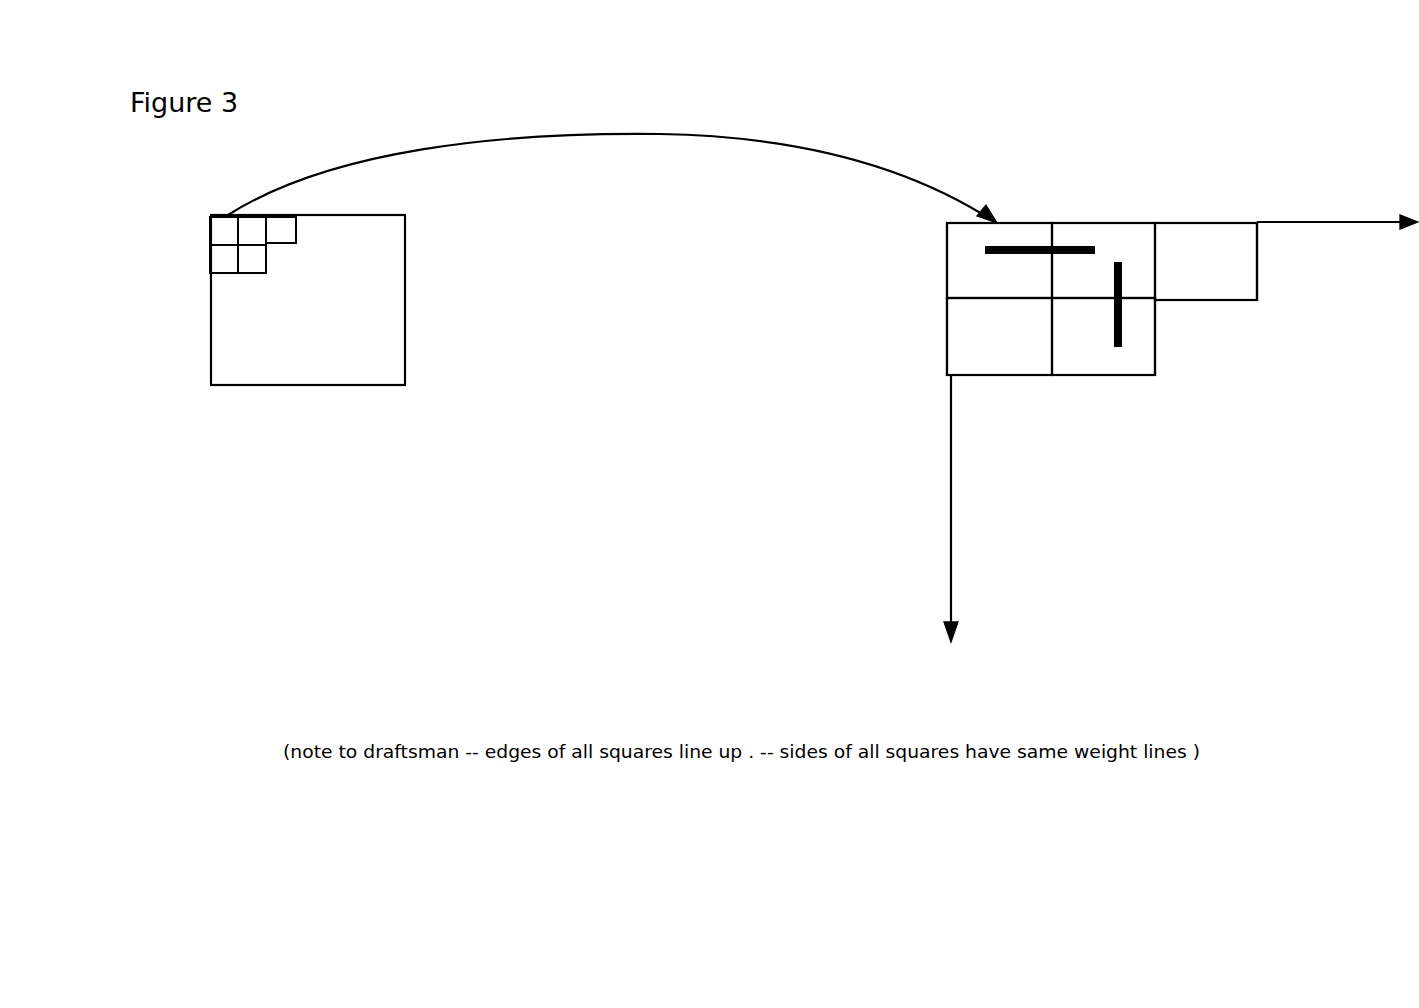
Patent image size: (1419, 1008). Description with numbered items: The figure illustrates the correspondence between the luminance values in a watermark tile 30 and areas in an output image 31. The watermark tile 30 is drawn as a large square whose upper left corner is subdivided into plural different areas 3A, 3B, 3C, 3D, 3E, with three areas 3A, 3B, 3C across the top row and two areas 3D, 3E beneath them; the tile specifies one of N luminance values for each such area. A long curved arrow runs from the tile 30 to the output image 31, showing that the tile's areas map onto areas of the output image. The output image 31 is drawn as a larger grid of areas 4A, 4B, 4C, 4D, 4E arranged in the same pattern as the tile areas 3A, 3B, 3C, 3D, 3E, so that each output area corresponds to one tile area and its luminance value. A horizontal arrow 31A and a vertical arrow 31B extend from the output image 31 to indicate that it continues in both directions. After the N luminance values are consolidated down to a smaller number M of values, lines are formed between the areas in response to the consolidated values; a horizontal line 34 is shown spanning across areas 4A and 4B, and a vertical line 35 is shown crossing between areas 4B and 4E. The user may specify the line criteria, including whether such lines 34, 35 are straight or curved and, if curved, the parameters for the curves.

The watermark tile 30 is at (288, 397).
The watermark tile area 3A is at (228, 228).
The watermark tile area 3B is at (252, 228).
The watermark tile area 3C is at (283, 217).
The watermark tile area 3D is at (215, 268).
The watermark tile area 3E is at (266, 274).
The output image 31 is at (1102, 406).
The horizontal extension arrow of output image 31A is at (1347, 225).
The vertical extension arrow of output image 31B is at (952, 525).
The output image area 4A is at (1010, 229).
The output image area 4B is at (1083, 223).
The output image area 4C is at (1205, 225).
The output image area 4D is at (947, 338).
The output image area 4E is at (1148, 355).
The horizontal line 34 is at (1025, 256).
The vertical line 35 is at (1112, 335).